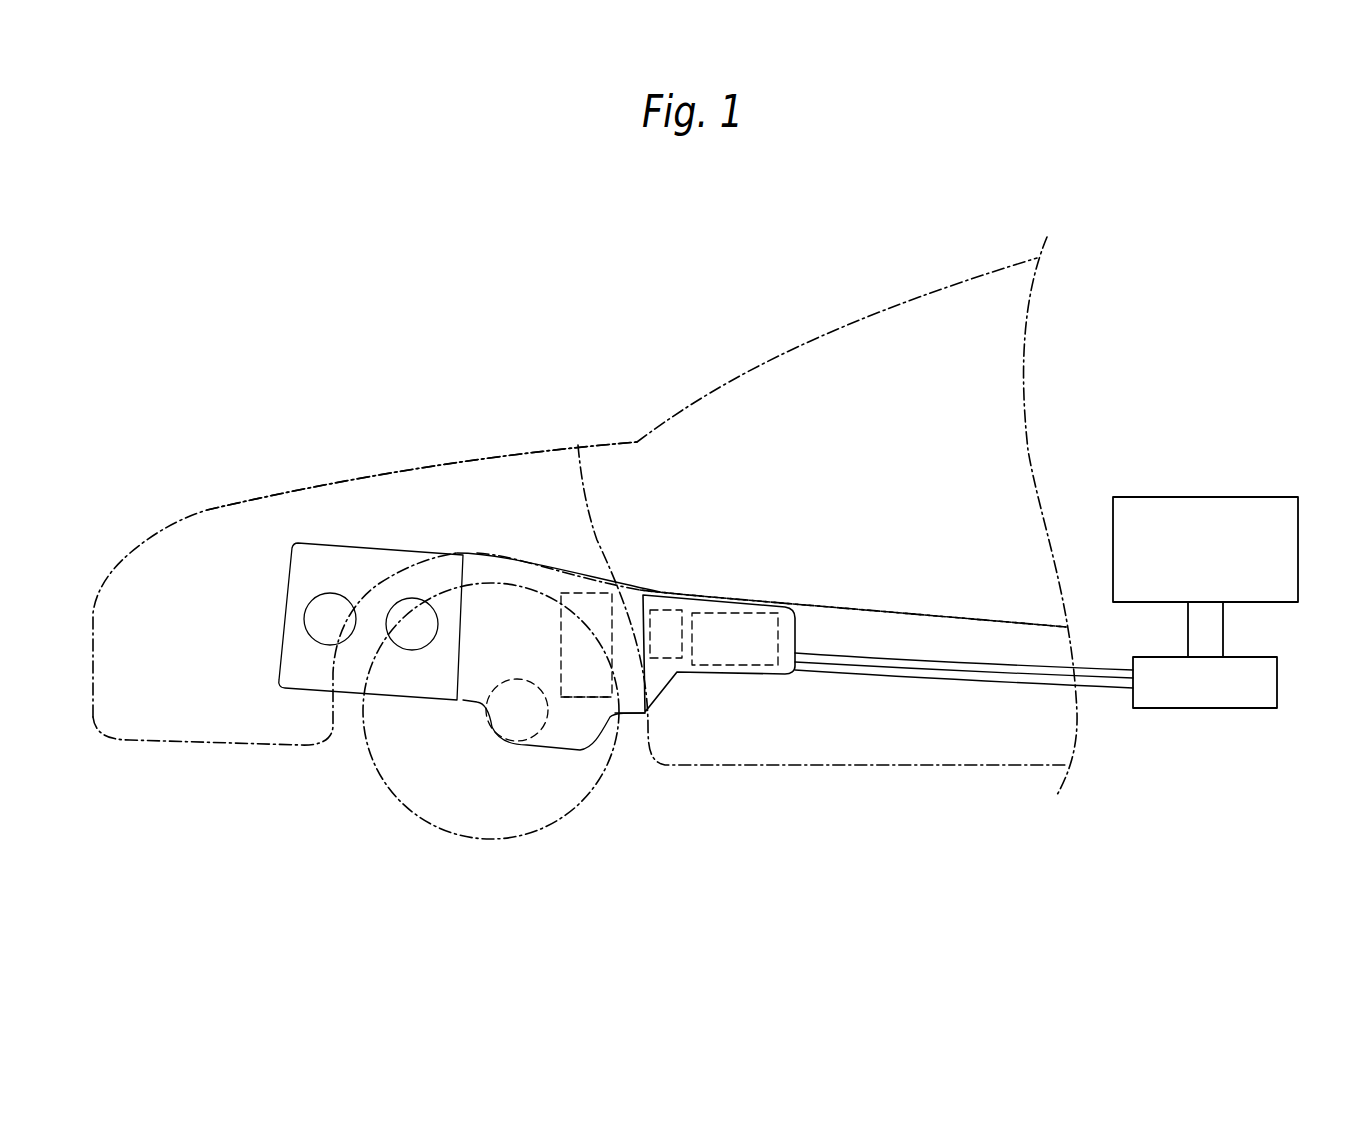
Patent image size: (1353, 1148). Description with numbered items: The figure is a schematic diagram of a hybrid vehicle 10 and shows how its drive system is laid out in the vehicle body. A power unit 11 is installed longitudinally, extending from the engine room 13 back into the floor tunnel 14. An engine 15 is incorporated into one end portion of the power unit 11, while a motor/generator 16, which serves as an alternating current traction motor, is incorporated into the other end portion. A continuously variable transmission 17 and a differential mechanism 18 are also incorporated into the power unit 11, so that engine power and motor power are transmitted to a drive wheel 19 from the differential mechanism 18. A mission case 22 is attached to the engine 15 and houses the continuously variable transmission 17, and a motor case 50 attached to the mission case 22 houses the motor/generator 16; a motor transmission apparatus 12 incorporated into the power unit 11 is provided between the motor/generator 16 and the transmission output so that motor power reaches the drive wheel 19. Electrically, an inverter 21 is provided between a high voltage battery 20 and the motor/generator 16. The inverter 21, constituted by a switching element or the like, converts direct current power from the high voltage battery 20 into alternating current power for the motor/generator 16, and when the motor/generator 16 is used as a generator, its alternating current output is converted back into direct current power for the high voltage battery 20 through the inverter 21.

The hybrid vehicle 10 is at (368, 263).
The power unit 11 is at (285, 538).
The motor transmission apparatus 12 is at (667, 622).
The engine room 13 is at (390, 505).
The floor tunnel 14 is at (935, 627).
The engine 15 is at (294, 582).
The motor/generator 16 is at (727, 623).
The continuously variable transmission 17 is at (587, 687).
The differential mechanism 18 is at (512, 722).
The drive wheel 19 is at (390, 792).
The high voltage battery 20 is at (1205, 497).
The inverter 21 is at (1213, 709).
The mission case 22 is at (602, 585).
The motor case 50 is at (768, 603).